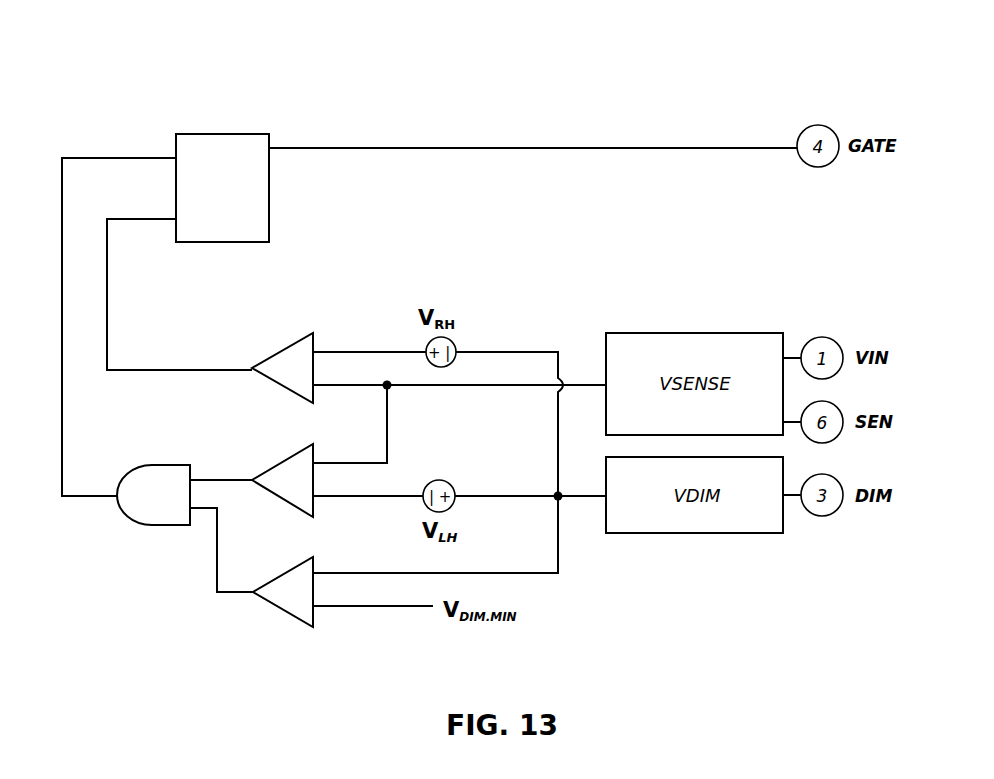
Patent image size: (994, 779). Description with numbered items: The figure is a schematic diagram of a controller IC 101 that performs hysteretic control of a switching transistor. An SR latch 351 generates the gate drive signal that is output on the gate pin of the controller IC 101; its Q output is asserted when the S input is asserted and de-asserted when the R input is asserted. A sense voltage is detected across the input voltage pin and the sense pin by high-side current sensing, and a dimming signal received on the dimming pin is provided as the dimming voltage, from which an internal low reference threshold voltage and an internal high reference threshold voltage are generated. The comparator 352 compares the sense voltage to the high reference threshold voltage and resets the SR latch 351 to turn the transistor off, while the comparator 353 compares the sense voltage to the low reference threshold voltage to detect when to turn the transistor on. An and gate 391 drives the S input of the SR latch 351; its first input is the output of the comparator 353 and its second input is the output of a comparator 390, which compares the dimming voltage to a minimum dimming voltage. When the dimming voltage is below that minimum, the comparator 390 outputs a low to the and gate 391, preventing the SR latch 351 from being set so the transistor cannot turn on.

The controller IC 101 is at (436, 68).
The SR latch 351 is at (222, 134).
The comparator 352 is at (283, 352).
The comparator 353 is at (278, 462).
The comparator 390 is at (275, 578).
The and gate 391 is at (153, 495).